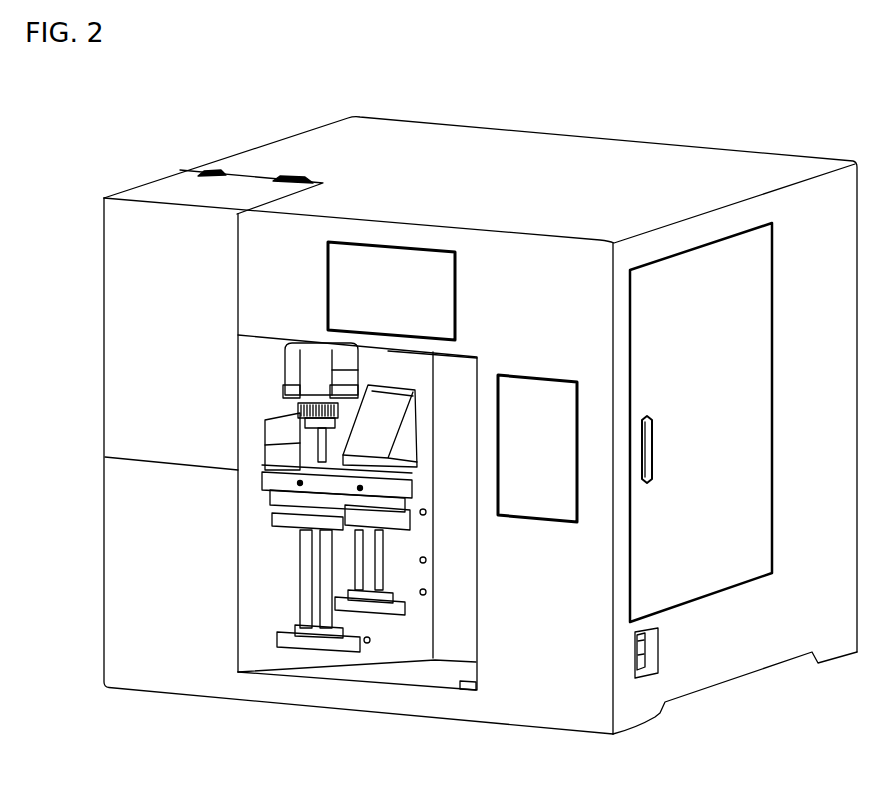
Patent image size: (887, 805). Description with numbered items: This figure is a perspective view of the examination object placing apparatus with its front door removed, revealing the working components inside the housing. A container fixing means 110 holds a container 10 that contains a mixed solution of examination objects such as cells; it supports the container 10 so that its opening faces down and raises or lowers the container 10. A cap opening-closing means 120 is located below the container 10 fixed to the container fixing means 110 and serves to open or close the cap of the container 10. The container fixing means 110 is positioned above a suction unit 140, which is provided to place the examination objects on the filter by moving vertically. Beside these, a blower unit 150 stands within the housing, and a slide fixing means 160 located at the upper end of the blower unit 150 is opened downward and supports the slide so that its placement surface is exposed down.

The container 10 is at (313, 380).
The container fixing means 110 is at (358, 354).
The cap opening-closing means 120 is at (265, 445).
The suction unit 140 is at (267, 500).
The blower unit 150 is at (387, 513).
The slide fixing means 160 is at (412, 428).